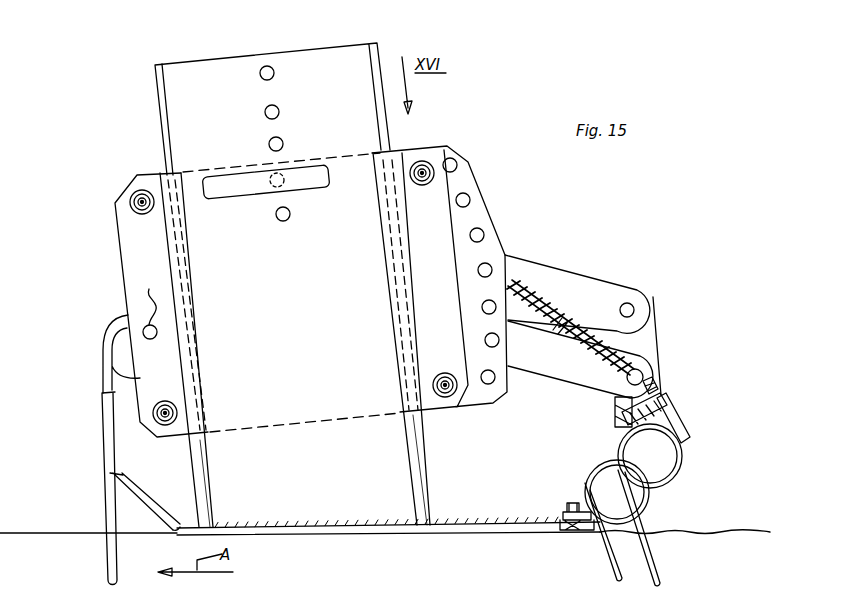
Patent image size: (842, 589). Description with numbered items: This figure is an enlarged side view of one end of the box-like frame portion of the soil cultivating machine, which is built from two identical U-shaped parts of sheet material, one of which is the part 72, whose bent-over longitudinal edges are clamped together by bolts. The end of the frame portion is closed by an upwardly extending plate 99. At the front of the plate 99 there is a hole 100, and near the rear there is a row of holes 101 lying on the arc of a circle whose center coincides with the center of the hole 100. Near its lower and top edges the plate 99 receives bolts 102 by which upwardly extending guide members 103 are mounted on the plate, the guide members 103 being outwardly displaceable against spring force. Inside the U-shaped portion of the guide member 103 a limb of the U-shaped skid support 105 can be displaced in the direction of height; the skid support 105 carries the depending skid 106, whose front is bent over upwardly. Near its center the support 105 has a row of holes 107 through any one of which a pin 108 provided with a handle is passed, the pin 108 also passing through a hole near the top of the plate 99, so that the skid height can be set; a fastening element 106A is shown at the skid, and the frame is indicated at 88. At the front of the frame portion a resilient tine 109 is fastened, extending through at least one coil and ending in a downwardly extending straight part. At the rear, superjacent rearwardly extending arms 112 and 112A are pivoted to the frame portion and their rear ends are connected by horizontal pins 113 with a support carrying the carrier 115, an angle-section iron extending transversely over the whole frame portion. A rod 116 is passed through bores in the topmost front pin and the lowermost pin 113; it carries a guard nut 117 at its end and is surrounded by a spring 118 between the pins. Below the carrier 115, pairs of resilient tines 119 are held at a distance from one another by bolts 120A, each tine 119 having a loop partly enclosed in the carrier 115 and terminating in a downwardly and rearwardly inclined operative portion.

The skid support 105 is at (172, 98).
The row of holes 107 is at (265, 111).
The pin 108 is at (273, 193).
The guide member 103 is at (203, 347).
The bolt 102 is at (142, 200).
The row of holes 101 is at (482, 232).
The plate 99 is at (482, 250).
The arm 112 is at (555, 273).
The lower link arm 112A is at (578, 368).
The horizontal pin 113 is at (642, 301).
The rod 116 is at (558, 318).
The spring 118 is at (582, 343).
The guard nut 117 is at (658, 383).
The carrier 115 is at (667, 412).
The bolt 120A is at (615, 407).
The tine 119 is at (660, 577).
The hole 100 is at (144, 305).
The tine 109 is at (108, 493).
The skid 106 is at (445, 528).
The base bolt 106A is at (605, 555).
The frame 88 is at (258, 514).
The U-shaped part 72 is at (429, 502).